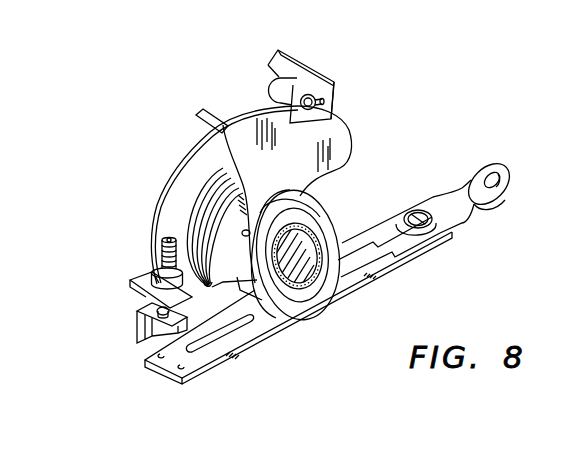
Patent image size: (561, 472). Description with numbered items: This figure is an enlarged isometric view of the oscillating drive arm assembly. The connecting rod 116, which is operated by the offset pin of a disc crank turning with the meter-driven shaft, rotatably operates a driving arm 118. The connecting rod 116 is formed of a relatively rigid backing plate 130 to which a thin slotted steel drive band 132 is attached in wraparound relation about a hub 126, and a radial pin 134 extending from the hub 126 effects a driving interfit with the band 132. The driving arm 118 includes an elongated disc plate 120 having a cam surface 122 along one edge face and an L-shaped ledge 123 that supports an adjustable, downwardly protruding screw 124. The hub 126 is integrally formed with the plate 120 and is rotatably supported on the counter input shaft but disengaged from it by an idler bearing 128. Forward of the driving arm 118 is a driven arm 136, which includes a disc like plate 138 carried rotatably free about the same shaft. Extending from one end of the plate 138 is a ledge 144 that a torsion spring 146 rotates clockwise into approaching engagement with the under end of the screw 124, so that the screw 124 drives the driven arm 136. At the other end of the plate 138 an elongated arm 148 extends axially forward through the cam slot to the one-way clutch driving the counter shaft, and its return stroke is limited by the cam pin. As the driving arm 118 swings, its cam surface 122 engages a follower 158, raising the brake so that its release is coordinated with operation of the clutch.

The connecting rod 116 is at (458, 246).
The driving arm 118 is at (377, 177).
The disc plate 120 is at (305, 176).
The cam surface 122 is at (348, 127).
The L-shaped ledge 123 is at (135, 278).
The screw 124 is at (162, 250).
The hub 126 is at (282, 312).
The idler bearing 128 is at (304, 284).
The backing plate 130 is at (405, 257).
The drive band 132 is at (190, 362).
The radial pin 134 is at (247, 229).
The driven arm 136 is at (132, 207).
The disc like plate 138 is at (149, 230).
The ledge 144 is at (150, 312).
The torsion spring 146 is at (212, 187).
The elongated arm 148 is at (221, 121).
The follower 158 is at (289, 83).